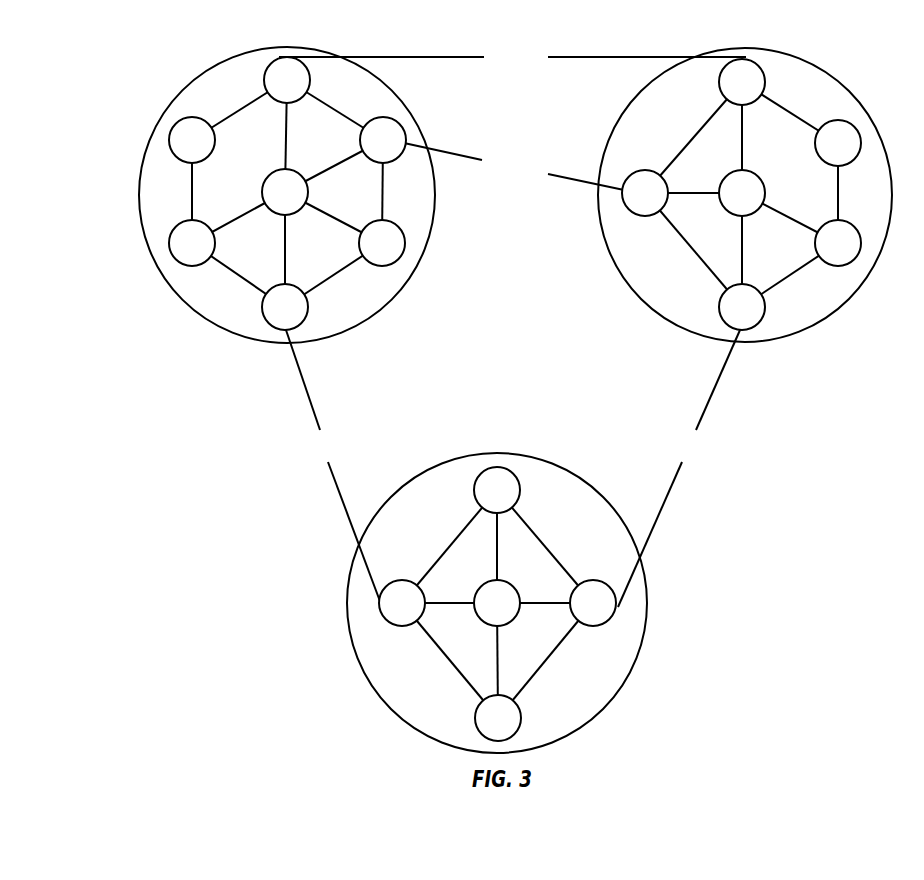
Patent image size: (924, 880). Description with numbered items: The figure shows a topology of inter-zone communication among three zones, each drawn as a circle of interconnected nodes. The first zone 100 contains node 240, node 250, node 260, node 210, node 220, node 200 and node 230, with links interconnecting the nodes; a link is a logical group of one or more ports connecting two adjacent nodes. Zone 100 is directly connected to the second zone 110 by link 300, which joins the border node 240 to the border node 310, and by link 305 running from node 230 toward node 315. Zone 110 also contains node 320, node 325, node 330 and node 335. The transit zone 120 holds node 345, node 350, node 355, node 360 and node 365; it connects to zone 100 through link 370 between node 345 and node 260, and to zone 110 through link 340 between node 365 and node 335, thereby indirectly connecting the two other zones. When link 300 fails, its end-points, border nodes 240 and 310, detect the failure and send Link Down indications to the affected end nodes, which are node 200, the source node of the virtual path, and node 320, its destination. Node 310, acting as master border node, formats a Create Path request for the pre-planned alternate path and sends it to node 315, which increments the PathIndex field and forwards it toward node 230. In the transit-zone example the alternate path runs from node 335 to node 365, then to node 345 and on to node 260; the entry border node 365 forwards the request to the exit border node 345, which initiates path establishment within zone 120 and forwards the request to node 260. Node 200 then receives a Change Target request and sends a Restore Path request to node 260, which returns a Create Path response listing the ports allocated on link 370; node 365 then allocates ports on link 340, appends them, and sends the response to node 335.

The zone 100 is at (207, 70).
The zone 110 is at (836, 78).
The transit zone 120 is at (349, 605).
The node 200 is at (286, 169).
The node 210 is at (199, 221).
The node 220 is at (215, 140).
The node 230 is at (309, 78).
The border node 240 is at (401, 123).
The node 250 is at (405, 242).
The node 260 is at (289, 285).
The link 300 is at (565, 186).
The link 305 is at (559, 51).
The border node 310 is at (626, 179).
The node 315 is at (719, 81).
The node 320 is at (731, 172).
The node 325 is at (815, 143).
The node 330 is at (816, 253).
The node 335 is at (729, 287).
The link 340 is at (733, 373).
The exit border node 345 is at (422, 588).
The node 350 is at (519, 479).
The node 355 is at (508, 581).
The node 360 is at (504, 695).
The entry border node 365 is at (614, 617).
The link 370 is at (291, 373).